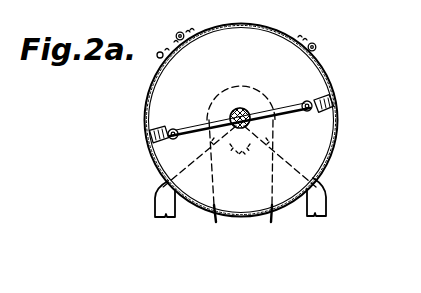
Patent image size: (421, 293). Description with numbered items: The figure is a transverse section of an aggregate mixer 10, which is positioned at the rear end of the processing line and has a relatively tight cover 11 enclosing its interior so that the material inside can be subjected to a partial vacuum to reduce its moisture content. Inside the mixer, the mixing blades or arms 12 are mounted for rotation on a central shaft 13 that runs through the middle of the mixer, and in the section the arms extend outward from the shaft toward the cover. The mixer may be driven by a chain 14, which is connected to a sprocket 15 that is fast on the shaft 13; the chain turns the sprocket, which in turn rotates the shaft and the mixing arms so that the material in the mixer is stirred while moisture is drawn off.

The mixer 10 is at (339, 134).
The cover 11 is at (281, 31).
The mixing blades or arms 12 is at (152, 133).
The central shaft 13 is at (246, 110).
The chain 14 is at (213, 221).
The sprocket 15 is at (239, 154).